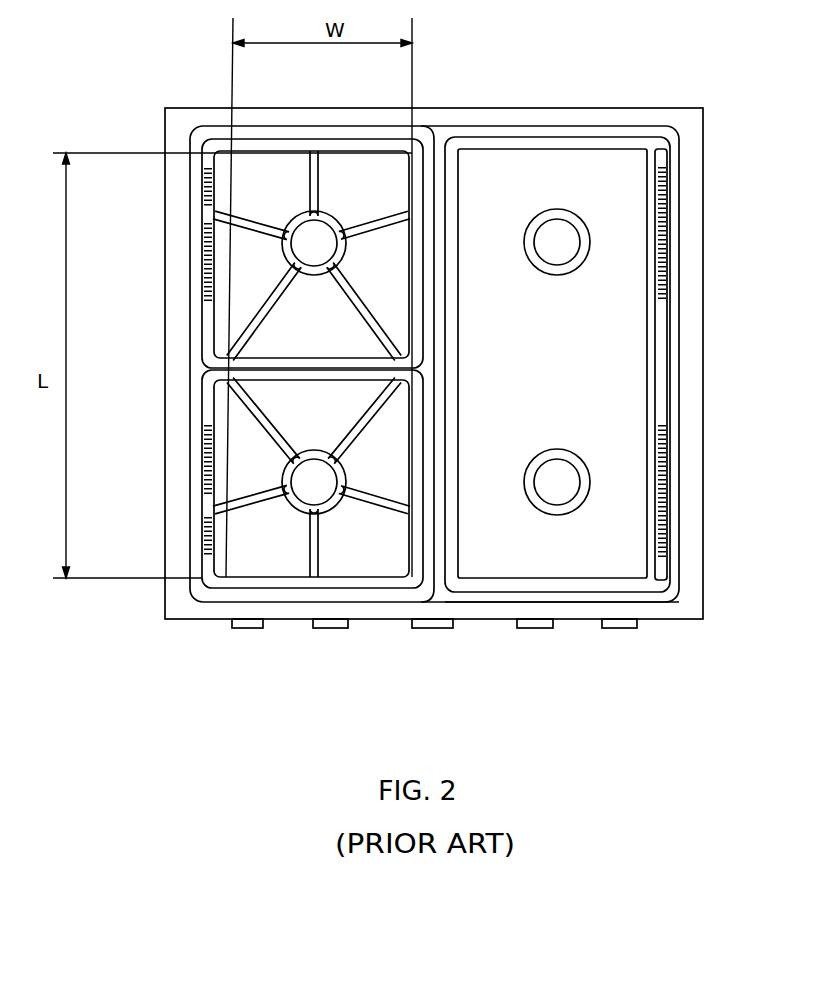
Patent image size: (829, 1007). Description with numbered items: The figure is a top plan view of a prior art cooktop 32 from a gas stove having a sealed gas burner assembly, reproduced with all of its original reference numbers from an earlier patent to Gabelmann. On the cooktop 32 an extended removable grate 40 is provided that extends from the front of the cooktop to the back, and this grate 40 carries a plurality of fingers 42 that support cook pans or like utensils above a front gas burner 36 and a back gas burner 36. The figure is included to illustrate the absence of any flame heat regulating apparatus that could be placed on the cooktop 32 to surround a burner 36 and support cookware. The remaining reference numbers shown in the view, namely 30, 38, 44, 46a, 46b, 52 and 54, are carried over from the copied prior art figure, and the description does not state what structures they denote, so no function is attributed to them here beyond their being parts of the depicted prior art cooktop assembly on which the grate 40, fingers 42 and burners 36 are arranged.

The cooktop 30 is at (163, 206).
The cooktop 32 is at (190, 285).
The gas burner 36 is at (332, 220).
The support feet 38 is at (323, 623).
The extended removable grate 40 is at (200, 367).
The fingers 42 is at (270, 313).
The griddle plate 44 is at (493, 144).
The cooking area 46a is at (548, 349).
The cooking area 46b is at (383, 553).
The center support 52 is at (420, 623).
The front edge 54 is at (487, 603).